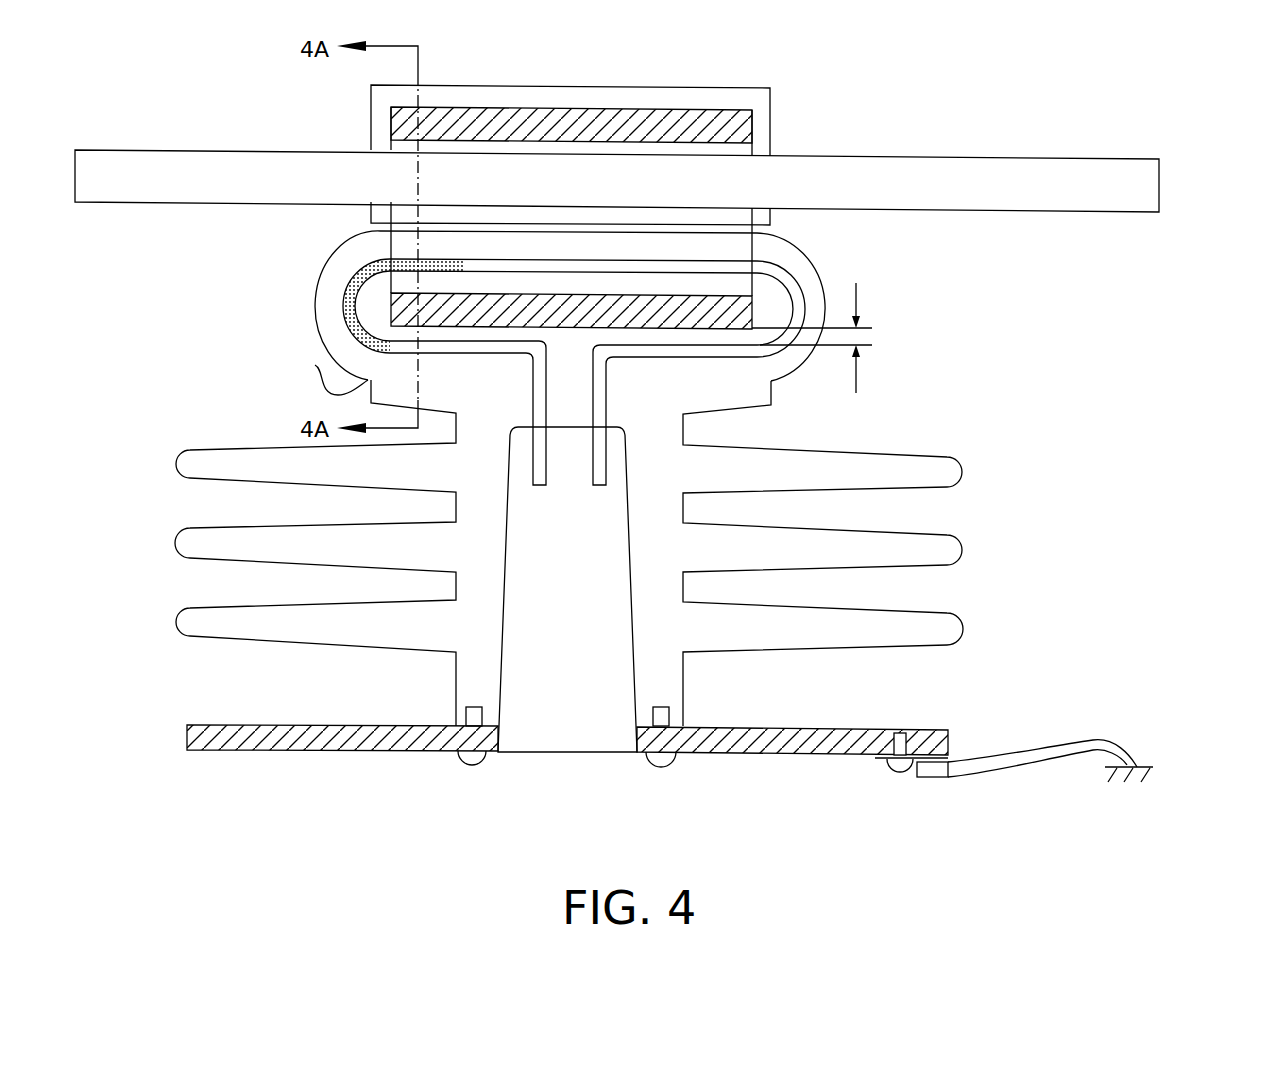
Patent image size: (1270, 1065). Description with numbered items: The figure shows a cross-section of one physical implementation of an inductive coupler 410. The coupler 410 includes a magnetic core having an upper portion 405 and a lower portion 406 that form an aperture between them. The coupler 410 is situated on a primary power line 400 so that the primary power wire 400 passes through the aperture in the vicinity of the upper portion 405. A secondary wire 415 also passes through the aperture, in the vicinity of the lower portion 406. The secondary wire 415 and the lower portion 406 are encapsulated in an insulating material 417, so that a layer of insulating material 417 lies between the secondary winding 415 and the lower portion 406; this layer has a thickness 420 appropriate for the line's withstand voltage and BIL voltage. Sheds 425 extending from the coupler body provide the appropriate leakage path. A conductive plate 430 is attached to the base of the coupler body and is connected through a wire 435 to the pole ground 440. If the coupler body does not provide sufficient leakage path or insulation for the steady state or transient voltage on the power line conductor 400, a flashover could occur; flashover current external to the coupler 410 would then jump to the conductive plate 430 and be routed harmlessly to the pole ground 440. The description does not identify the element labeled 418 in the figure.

The primary power line 400 is at (133, 150).
The upper portion 405 is at (752, 134).
The lower portion 406 is at (756, 318).
The coupler 410 is at (658, 87).
The secondary wire 415 is at (377, 312).
The insulating material 417 is at (338, 358).
The housing cavity 418 is at (736, 104).
The thickness 420 is at (830, 338).
The sheds 425 is at (962, 472).
The conductive plate 430 is at (910, 730).
The wire 435 is at (1093, 740).
The pole ground 440 is at (1143, 767).